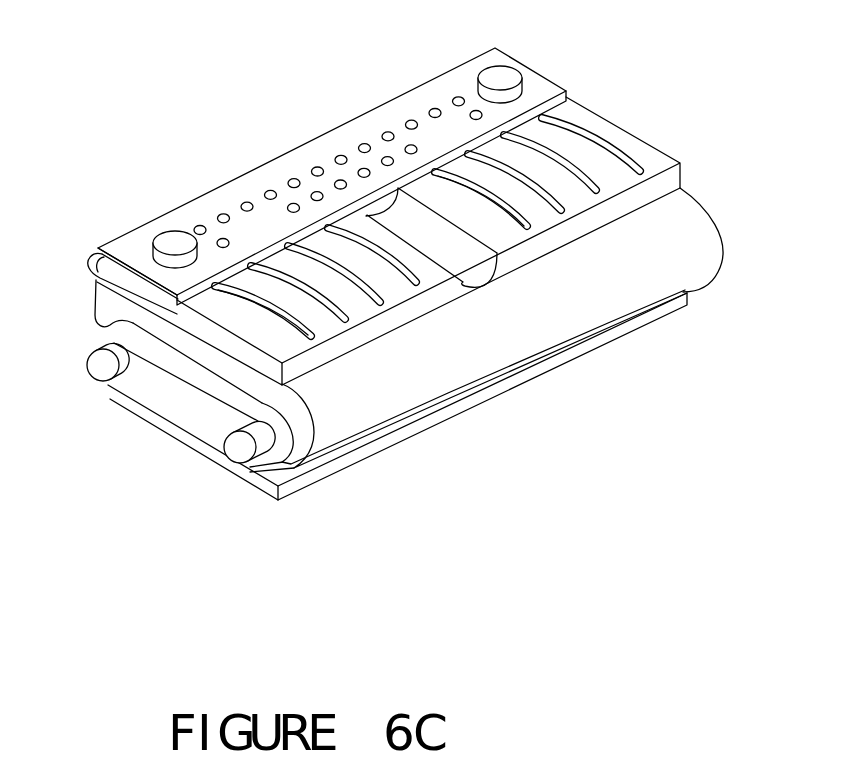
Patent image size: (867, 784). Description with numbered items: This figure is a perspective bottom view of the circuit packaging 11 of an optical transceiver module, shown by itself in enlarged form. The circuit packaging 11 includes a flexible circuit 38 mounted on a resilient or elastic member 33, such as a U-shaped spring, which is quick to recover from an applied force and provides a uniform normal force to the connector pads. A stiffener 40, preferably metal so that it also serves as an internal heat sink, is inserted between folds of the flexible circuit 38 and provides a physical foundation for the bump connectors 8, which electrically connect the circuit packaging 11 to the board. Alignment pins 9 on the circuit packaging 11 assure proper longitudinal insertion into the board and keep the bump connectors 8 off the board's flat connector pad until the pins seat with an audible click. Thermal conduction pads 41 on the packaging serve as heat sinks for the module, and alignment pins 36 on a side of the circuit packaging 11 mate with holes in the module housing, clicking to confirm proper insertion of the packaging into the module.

The bump connectors 8 is at (362, 144).
The alignment pins 9 is at (172, 241).
The circuit packaging 11 is at (403, 312).
The resilient member 33 is at (130, 323).
The alignment pins 36 is at (100, 368).
The flexible circuit 38 is at (697, 232).
The stiffener 40 is at (118, 282).
The thermal conduction pads 41 is at (593, 138).